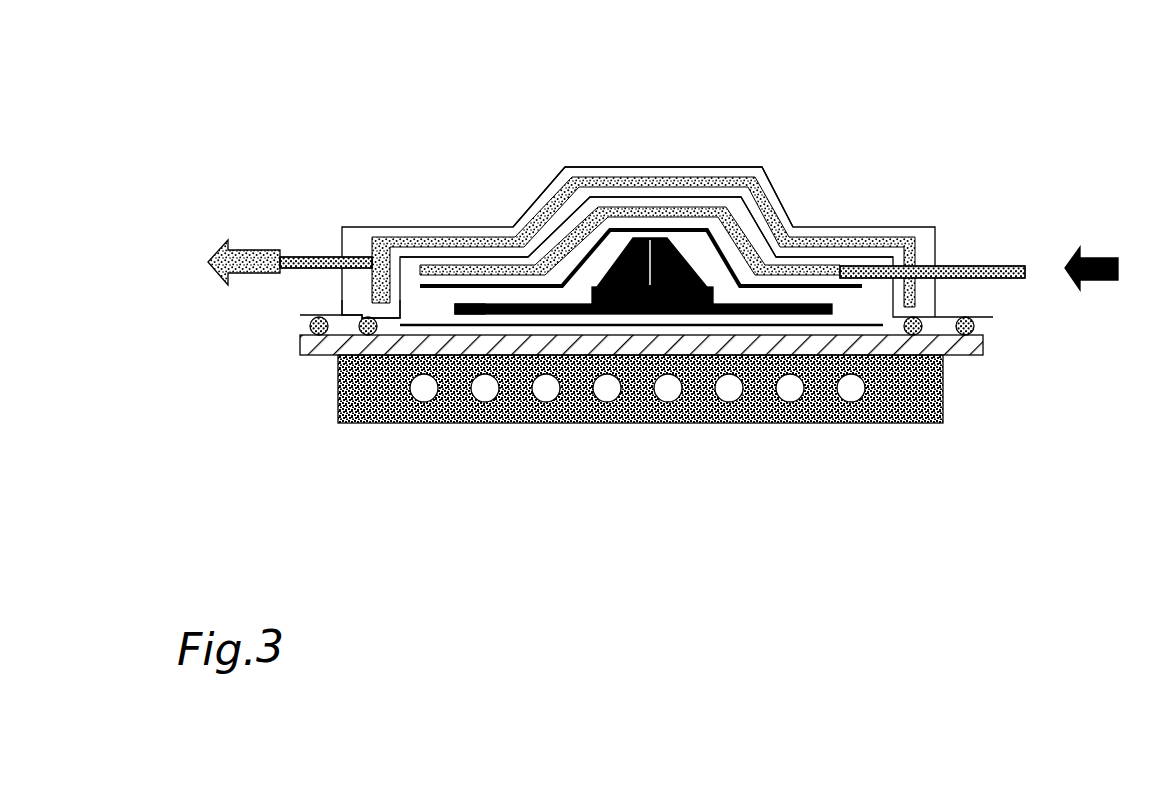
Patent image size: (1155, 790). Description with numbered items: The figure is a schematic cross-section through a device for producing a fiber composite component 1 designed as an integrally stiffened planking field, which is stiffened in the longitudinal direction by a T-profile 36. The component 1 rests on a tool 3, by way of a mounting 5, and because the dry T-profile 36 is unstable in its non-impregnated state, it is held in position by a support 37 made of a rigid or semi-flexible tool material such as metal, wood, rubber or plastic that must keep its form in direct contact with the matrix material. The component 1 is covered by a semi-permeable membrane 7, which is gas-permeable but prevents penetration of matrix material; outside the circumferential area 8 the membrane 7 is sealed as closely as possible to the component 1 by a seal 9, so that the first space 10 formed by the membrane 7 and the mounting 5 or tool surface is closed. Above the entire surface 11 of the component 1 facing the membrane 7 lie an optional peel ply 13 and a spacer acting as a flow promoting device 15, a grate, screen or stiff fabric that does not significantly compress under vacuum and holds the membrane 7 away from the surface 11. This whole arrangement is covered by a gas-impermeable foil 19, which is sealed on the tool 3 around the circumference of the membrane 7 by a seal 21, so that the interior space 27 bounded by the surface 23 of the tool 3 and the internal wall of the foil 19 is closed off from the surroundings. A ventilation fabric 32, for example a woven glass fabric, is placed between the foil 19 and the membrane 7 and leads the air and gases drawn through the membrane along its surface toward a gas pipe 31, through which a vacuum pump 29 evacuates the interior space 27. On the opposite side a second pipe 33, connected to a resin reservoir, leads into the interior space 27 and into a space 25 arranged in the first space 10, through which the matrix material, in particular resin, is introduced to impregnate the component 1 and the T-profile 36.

The component 1 is at (540, 300).
The tool 3 is at (987, 357).
The mounting 5 is at (631, 399).
The semi-permeable membrane 7 is at (764, 247).
The circumferential area 8 is at (457, 304).
The seal 9 is at (352, 333).
The first space 10 is at (487, 262).
The surface 11 is at (616, 204).
The peel ply 13 is at (809, 282).
The flow promoting device 15 is at (715, 208).
The foil 19 is at (586, 164).
The seal 21 is at (301, 327).
The surface 23 is at (1039, 324).
The space 25 is at (865, 304).
The interior space 27 is at (348, 297).
The vacuum pump 29 is at (224, 236).
The gas pipe 31 is at (308, 255).
The ventilation fabric 32 is at (371, 240).
The pipe 33 is at (959, 265).
The T-profile 36 is at (641, 308).
The support 37 is at (701, 309).